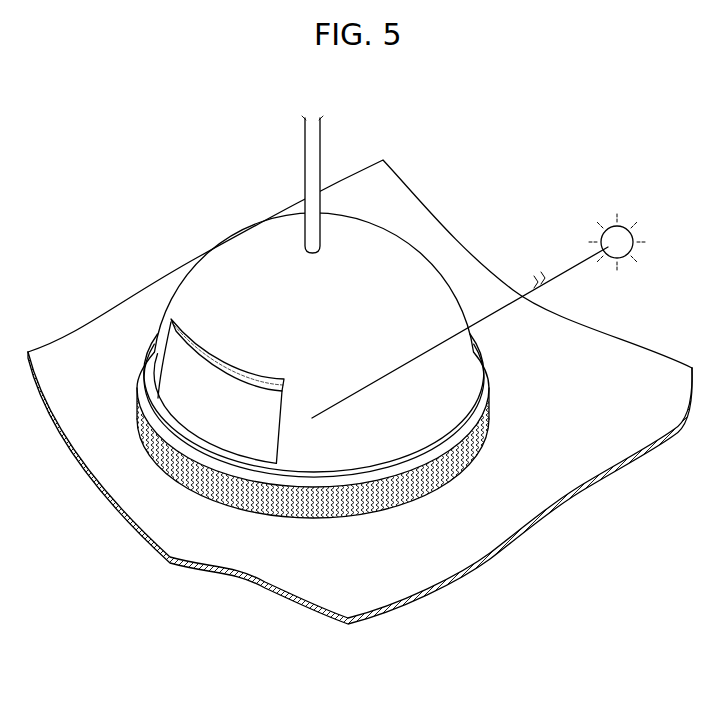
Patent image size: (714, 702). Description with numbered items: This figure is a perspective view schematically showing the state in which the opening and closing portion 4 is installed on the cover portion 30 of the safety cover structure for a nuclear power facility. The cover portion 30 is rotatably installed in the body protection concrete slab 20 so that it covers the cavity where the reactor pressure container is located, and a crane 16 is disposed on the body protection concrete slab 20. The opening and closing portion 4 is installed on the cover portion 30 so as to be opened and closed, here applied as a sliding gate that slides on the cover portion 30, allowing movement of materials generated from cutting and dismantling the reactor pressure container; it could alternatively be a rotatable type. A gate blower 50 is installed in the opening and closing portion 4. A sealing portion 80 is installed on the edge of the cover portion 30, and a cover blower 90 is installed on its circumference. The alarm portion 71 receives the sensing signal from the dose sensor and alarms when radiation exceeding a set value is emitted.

The opening and closing portion 4 is at (200, 415).
The crane 16 is at (321, 132).
The body protection concrete slab 20 is at (368, 570).
The cover portion 30 is at (417, 277).
The gate blower 50 is at (192, 338).
The alarm portion 71 is at (618, 225).
The sealing portion 80 is at (208, 470).
The cover blower 90 is at (287, 478).